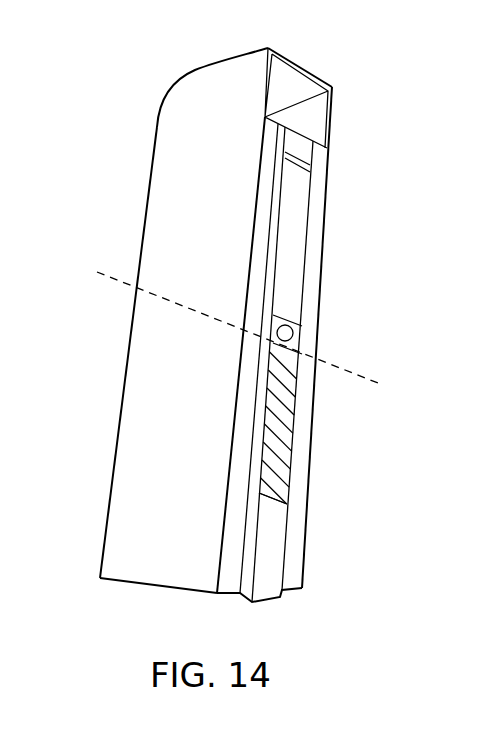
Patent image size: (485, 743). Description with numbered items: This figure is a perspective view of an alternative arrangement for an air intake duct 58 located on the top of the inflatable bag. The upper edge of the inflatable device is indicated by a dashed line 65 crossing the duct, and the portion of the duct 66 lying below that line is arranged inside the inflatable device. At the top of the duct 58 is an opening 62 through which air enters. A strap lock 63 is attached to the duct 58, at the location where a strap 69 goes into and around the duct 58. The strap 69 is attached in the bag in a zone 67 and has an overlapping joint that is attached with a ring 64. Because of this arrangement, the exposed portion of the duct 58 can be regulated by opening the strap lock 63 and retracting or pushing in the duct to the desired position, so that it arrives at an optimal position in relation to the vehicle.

The air intake duct 58 is at (235, 184).
The opening 62 is at (280, 88).
The strap lock 63 is at (297, 148).
The ring 64 is at (294, 332).
The upper edge of the inflatable device 65 is at (120, 280).
The portion of the duct arranged inside the inflatable device 66 is at (247, 358).
The zone 67 is at (278, 420).
The strap 69 is at (250, 482).